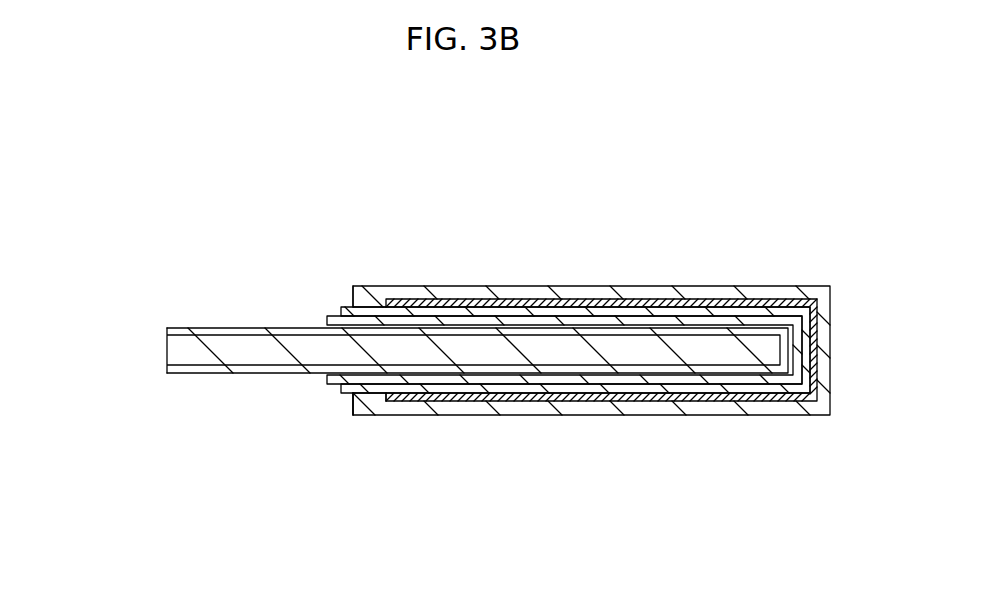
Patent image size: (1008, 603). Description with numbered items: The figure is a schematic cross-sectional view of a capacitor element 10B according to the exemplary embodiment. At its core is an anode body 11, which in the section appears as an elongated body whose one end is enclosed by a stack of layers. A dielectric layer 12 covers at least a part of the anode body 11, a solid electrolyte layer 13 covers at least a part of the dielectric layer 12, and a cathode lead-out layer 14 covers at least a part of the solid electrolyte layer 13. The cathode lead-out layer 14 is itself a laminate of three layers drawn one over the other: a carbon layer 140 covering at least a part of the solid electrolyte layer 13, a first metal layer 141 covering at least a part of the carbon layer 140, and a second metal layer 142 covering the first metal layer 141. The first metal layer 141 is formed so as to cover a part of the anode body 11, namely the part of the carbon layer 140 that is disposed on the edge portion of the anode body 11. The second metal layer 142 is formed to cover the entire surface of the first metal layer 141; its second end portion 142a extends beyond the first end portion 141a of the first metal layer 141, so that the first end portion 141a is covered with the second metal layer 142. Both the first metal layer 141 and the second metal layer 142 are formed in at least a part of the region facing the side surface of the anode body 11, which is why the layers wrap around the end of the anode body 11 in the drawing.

The capacitor element 10B is at (503, 186).
The anode body 11 is at (203, 343).
The dielectric layer 12 is at (228, 332).
The solid electrolyte layer 13 is at (794, 338).
The cathode lead-out layer 14 is at (585, 414).
The carbon layer 140 is at (758, 386).
The first metal layer 141 is at (667, 398).
The second metal layer 142 is at (730, 505).
The first end portion 141a is at (386, 403).
The second end portion 142a is at (352, 403).